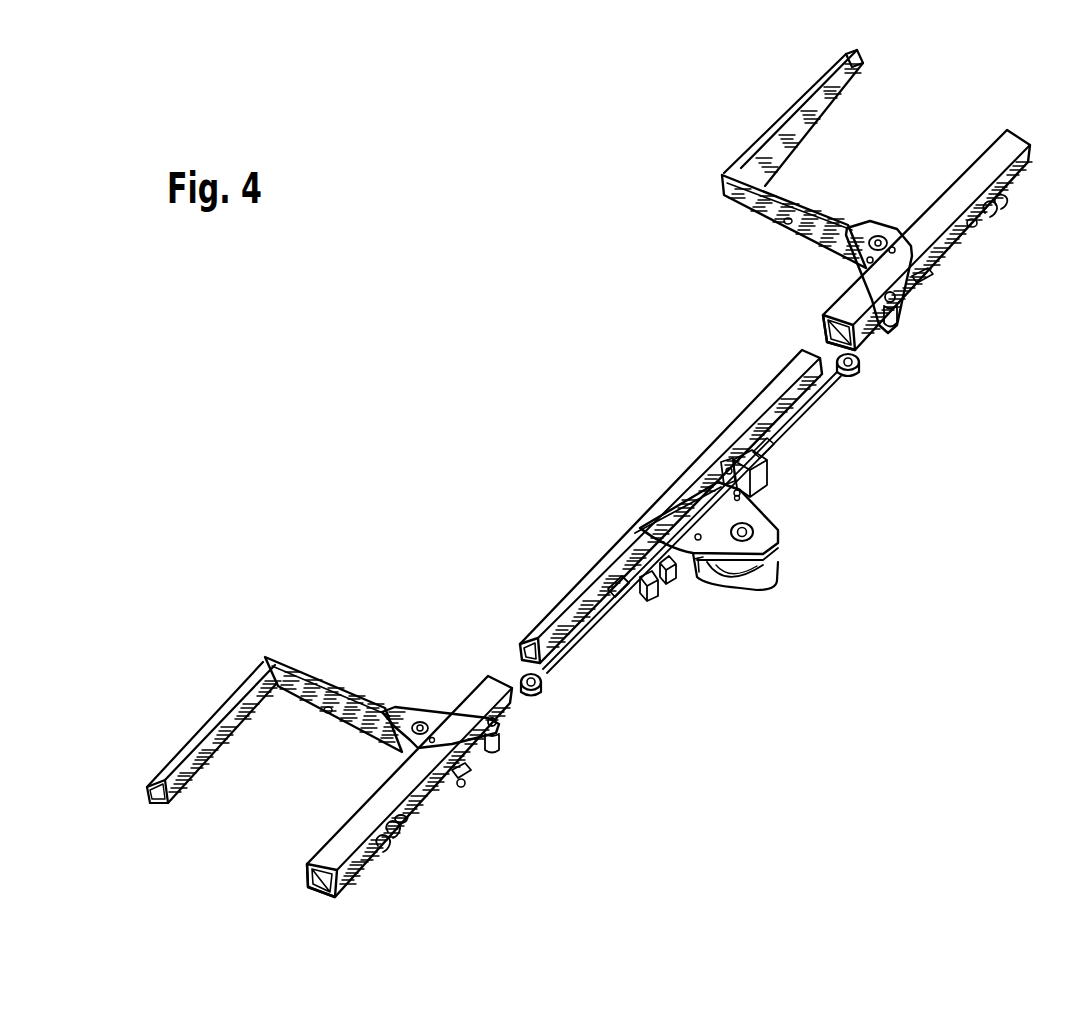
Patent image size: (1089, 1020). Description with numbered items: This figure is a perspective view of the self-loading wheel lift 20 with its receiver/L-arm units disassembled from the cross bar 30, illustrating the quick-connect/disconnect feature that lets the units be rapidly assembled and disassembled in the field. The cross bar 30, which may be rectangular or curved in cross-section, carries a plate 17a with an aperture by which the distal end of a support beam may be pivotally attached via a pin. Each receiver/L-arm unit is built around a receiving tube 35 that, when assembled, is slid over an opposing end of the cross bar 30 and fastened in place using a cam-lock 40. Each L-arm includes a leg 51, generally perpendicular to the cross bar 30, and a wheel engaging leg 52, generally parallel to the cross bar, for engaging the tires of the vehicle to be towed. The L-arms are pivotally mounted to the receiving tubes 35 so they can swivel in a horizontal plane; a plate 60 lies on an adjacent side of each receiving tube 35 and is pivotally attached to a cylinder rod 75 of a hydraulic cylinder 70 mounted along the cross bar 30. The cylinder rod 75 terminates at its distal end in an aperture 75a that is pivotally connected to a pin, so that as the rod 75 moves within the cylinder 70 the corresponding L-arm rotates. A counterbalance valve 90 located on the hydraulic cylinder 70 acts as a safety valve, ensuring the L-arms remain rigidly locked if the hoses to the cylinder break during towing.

The wheel lift 20 is at (912, 126).
The cross bar 30 is at (610, 563).
The receiving tube 35 is at (1030, 158).
The cam-lock 40 is at (467, 780).
The leg 51 is at (777, 217).
The wheel engaging leg 52 is at (810, 94).
The plate 60 is at (855, 224).
The hydraulic cylinder 70 is at (630, 588).
The cylinder rod 75 is at (563, 650).
The aperture 75a is at (533, 690).
The counterbalance valve 90 is at (763, 481).
The plate 17a is at (770, 533).